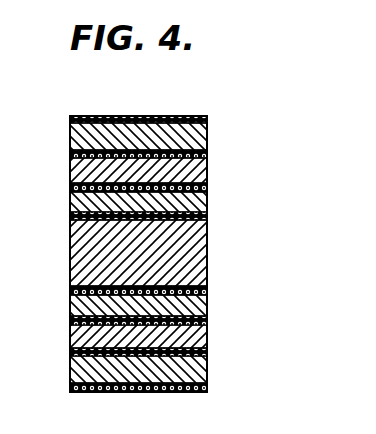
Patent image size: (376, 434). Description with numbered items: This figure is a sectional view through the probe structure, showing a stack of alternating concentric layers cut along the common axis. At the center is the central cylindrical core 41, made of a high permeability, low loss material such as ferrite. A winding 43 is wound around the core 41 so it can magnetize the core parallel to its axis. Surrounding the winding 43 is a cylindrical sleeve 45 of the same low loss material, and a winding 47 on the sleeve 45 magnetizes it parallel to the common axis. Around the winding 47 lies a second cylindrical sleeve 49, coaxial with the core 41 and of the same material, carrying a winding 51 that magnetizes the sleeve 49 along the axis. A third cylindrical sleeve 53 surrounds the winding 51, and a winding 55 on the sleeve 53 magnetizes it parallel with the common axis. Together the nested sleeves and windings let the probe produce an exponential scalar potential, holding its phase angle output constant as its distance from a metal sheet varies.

The central cylindrical core 41 is at (72, 240).
The winding 43 is at (207, 218).
The cylindrical sleeve 45 is at (74, 198).
The winding 47 is at (207, 188).
The second cylindrical sleeve 49 is at (78, 168).
The winding 51 is at (207, 153).
The third cylindrical sleeve 53 is at (78, 137).
The winding 55 is at (70, 118).